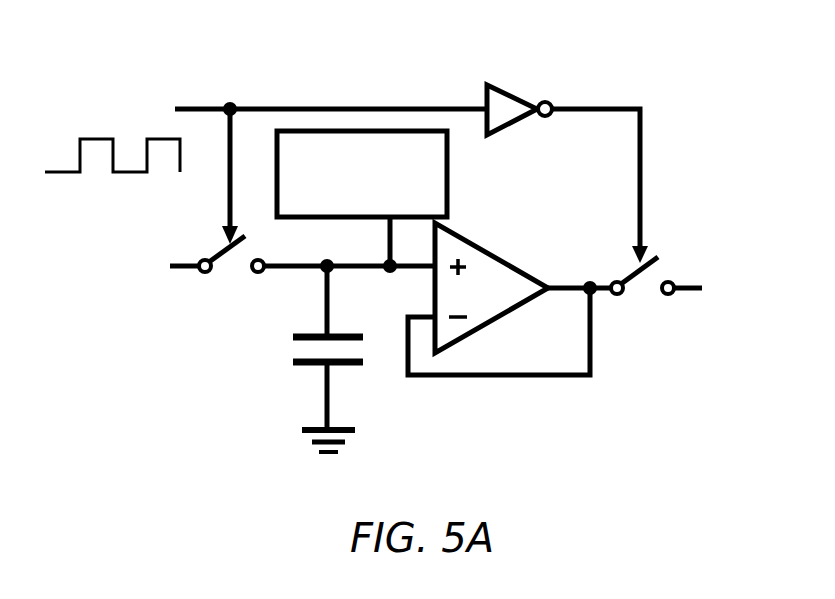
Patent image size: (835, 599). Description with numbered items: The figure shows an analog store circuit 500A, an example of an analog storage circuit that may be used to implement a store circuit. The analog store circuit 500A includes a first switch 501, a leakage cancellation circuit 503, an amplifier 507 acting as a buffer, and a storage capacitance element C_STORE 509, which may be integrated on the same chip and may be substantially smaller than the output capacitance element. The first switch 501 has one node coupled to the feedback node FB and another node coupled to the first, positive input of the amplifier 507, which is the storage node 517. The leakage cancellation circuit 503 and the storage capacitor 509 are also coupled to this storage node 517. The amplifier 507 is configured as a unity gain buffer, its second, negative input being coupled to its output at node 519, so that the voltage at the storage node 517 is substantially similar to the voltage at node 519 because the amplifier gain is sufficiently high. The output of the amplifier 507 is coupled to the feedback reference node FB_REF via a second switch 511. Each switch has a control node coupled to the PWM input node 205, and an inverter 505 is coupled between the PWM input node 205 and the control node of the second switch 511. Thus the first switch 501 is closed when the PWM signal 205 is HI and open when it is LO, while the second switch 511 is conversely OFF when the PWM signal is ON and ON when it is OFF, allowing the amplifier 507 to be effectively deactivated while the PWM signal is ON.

The analog store circuit 500A is at (128, 24).
The PWM input node 205 is at (231, 100).
The inverter 505 is at (510, 94).
The leakage cancellation circuit 503 is at (452, 178).
The first switch 501 is at (236, 277).
The storage node 517 is at (268, 264).
The storage capacitance element 509 is at (313, 365).
The amplifier 507 is at (460, 243).
The output node 519 is at (585, 277).
The second switch 511 is at (662, 272).